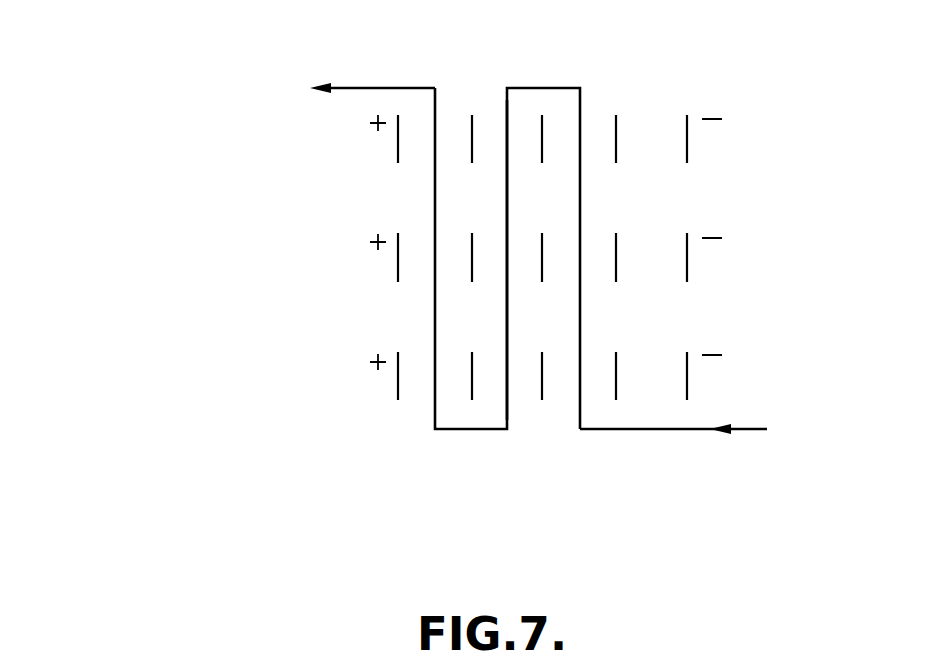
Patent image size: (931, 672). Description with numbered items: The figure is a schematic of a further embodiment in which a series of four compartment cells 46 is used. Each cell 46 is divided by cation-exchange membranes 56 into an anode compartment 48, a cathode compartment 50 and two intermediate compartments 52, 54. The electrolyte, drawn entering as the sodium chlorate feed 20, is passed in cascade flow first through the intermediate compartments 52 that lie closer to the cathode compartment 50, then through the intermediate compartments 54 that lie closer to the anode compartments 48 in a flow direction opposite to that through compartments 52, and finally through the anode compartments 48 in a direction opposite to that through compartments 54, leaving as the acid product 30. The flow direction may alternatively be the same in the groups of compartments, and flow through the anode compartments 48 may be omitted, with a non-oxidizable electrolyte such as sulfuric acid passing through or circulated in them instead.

The sodium chlorate feed 20 is at (738, 430).
The acid product outlet 30 is at (353, 88).
The four compartment cell 46 is at (728, 378).
The anode compartment 48 is at (418, 390).
The cathode compartment 50 is at (658, 123).
The intermediate compartment 52 is at (594, 135).
The intermediate compartment 54 is at (489, 117).
The cation-exchange membrane 56 is at (472, 135).